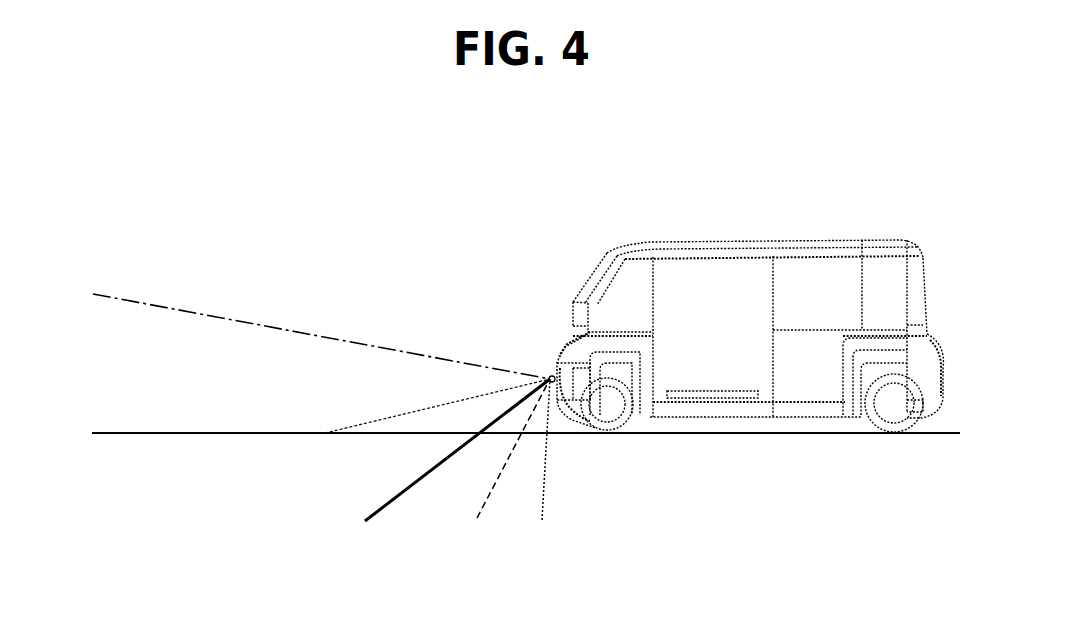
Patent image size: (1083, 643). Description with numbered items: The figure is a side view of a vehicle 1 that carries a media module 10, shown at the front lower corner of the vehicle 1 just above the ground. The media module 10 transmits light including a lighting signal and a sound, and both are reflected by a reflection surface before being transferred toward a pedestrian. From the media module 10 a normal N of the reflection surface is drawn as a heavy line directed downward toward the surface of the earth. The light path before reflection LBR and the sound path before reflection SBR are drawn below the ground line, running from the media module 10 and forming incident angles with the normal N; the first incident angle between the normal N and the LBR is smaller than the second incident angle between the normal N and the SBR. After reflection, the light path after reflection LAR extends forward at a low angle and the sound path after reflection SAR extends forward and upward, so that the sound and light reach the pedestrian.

The vehicle 1 is at (792, 218).
The media module 10 is at (552, 376).
The sound path after reflection SAR is at (353, 341).
The light path after reflection LAR is at (358, 434).
The normal N is at (417, 484).
The light path before reflection LBR is at (490, 497).
The sound path before reflection SBR is at (544, 489).